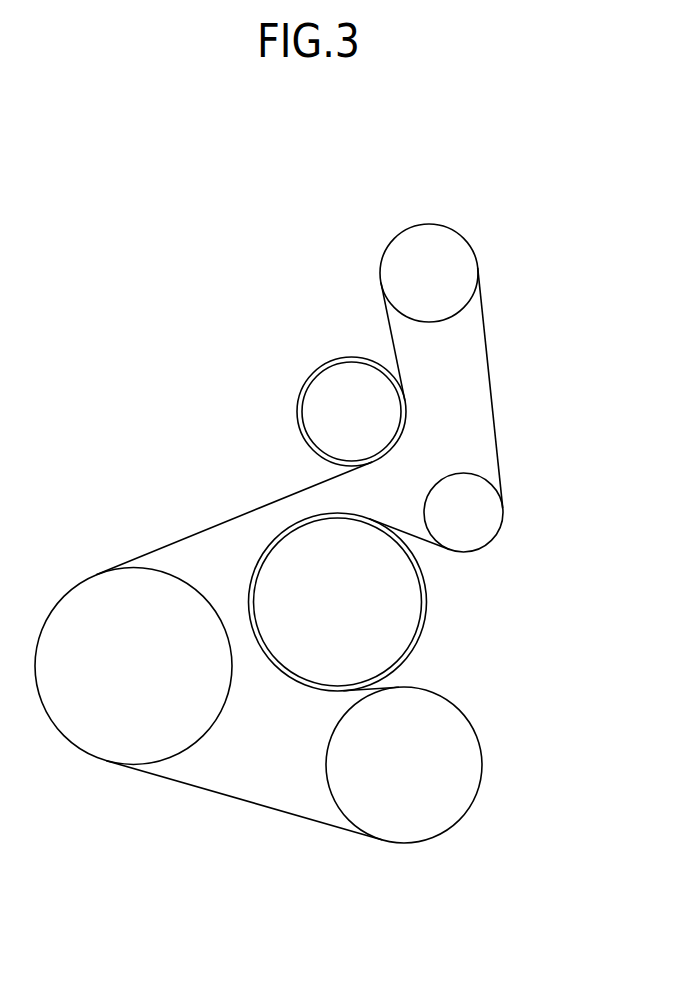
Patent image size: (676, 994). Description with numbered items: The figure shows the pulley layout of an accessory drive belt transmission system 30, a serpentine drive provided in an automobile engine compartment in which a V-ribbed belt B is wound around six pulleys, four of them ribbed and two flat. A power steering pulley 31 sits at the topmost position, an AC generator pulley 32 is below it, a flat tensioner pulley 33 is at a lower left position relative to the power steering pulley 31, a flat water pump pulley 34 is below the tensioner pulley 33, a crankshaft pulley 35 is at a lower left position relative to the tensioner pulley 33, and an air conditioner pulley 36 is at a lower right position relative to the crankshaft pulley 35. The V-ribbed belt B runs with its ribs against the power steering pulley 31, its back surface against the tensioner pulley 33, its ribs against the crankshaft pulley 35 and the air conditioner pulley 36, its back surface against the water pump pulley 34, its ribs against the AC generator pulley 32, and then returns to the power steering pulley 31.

The accessory drive belt transmission system 30 is at (214, 235).
The power steering pulley 31 is at (457, 245).
The AC generator pulley 32 is at (475, 530).
The flat tensioner pulley 33 is at (328, 382).
The flat water pump pulley 34 is at (400, 600).
The crankshaft pulley 35 is at (85, 742).
The air conditioner pulley 36 is at (460, 776).
The V-ribbed belt B is at (233, 517).